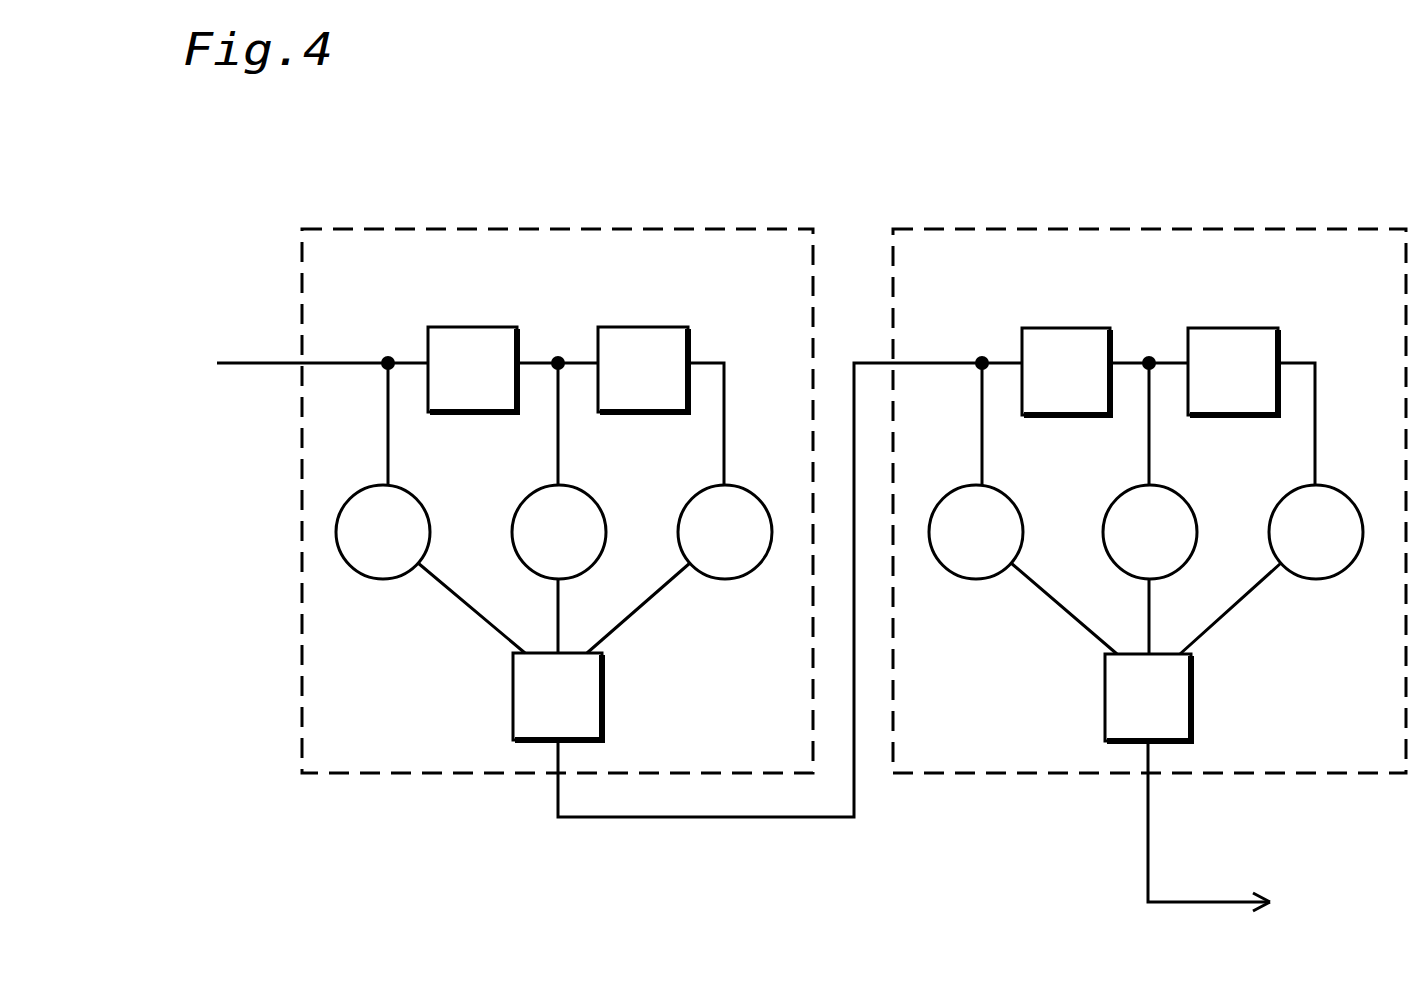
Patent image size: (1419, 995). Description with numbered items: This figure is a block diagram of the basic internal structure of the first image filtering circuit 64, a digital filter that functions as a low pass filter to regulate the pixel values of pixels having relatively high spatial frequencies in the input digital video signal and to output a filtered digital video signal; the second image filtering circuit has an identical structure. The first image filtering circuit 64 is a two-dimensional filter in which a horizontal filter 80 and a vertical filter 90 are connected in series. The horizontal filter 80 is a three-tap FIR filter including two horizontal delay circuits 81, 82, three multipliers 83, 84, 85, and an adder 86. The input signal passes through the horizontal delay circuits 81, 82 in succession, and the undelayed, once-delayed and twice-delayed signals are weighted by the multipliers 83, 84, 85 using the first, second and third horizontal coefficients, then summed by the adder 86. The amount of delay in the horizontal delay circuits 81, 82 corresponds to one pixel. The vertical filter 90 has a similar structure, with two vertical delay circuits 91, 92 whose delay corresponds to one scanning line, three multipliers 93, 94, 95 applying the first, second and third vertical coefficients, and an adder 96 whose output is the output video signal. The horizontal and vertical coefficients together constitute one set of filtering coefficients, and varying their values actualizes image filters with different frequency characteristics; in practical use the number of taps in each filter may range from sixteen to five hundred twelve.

The first image filtering circuit 64 is at (912, 143).
The horizontal filter 80 is at (633, 229).
The horizontal delay circuit 81 is at (470, 327).
The horizontal delay circuit 82 is at (640, 327).
The multiplier 83 is at (404, 489).
The multiplier 84 is at (573, 489).
The multiplier 85 is at (737, 489).
The adder 86 is at (604, 678).
The vertical filter 90 is at (1223, 229).
The vertical delay circuit 91 is at (1063, 328).
The vertical delay circuit 92 is at (1230, 328).
The multiplier 93 is at (997, 489).
The multiplier 94 is at (1163, 489).
The multiplier 95 is at (1328, 489).
The adder 96 is at (1193, 678).